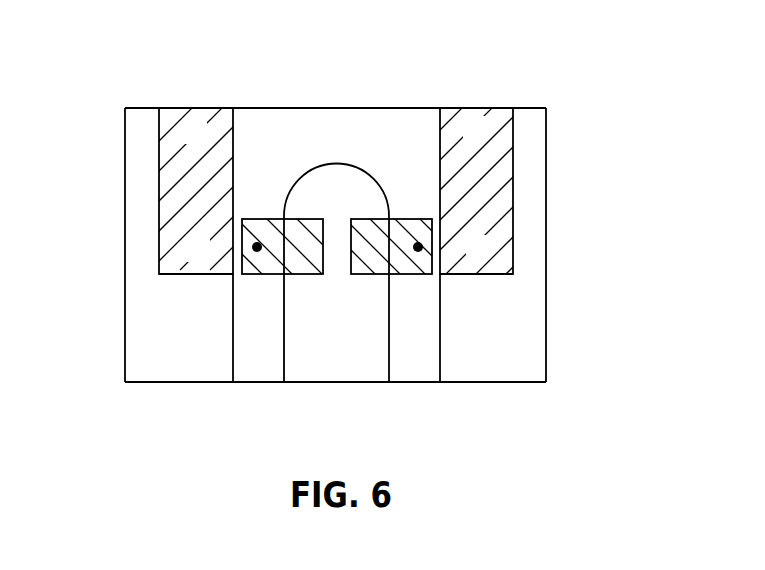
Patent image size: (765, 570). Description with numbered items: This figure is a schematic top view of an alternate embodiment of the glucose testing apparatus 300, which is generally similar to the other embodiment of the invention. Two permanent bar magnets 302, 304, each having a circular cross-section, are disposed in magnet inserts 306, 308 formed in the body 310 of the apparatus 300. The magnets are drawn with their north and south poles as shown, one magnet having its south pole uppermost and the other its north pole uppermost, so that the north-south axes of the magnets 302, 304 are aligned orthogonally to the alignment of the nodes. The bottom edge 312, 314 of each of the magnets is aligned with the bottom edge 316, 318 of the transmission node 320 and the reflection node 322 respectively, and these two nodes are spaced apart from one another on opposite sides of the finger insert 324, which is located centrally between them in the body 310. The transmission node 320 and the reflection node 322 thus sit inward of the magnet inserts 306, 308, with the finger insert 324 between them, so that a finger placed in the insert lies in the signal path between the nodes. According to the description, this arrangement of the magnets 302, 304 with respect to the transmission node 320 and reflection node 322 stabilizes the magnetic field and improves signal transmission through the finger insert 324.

The apparatus 300 is at (436, 78).
The permanent bar magnet 302 is at (157, 182).
The permanent bar magnet 304 is at (513, 198).
The magnet insert 306 is at (160, 141).
The magnet insert 308 is at (513, 135).
The body 310 is at (192, 367).
The bottom edge of magnet 312 is at (182, 279).
The bottom edge of magnet 314 is at (495, 274).
The bottom edge of transmission node 316 is at (267, 277).
The bottom edge of reflection node 318 is at (425, 278).
The transmission node 320 is at (308, 277).
The reflection node 322 is at (370, 275).
The finger insert 324 is at (330, 357).